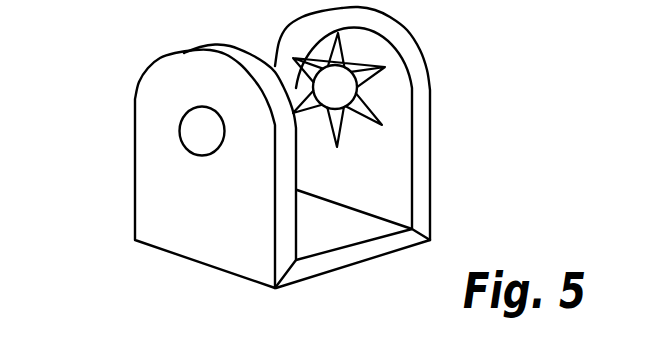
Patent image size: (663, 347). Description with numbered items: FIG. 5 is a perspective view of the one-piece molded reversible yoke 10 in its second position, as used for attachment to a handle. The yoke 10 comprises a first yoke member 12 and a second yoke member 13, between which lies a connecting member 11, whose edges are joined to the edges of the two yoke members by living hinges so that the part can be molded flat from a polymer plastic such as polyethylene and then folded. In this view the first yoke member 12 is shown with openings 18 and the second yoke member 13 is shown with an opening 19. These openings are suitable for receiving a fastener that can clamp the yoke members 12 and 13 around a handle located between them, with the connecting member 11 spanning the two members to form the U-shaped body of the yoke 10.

The reversible yoke 10 is at (113, 65).
The connecting member 11 is at (350, 266).
The first yoke member 12 is at (150, 150).
The second yoke member 13 is at (426, 118).
The openings 18 is at (198, 137).
The opening 19 is at (327, 88).